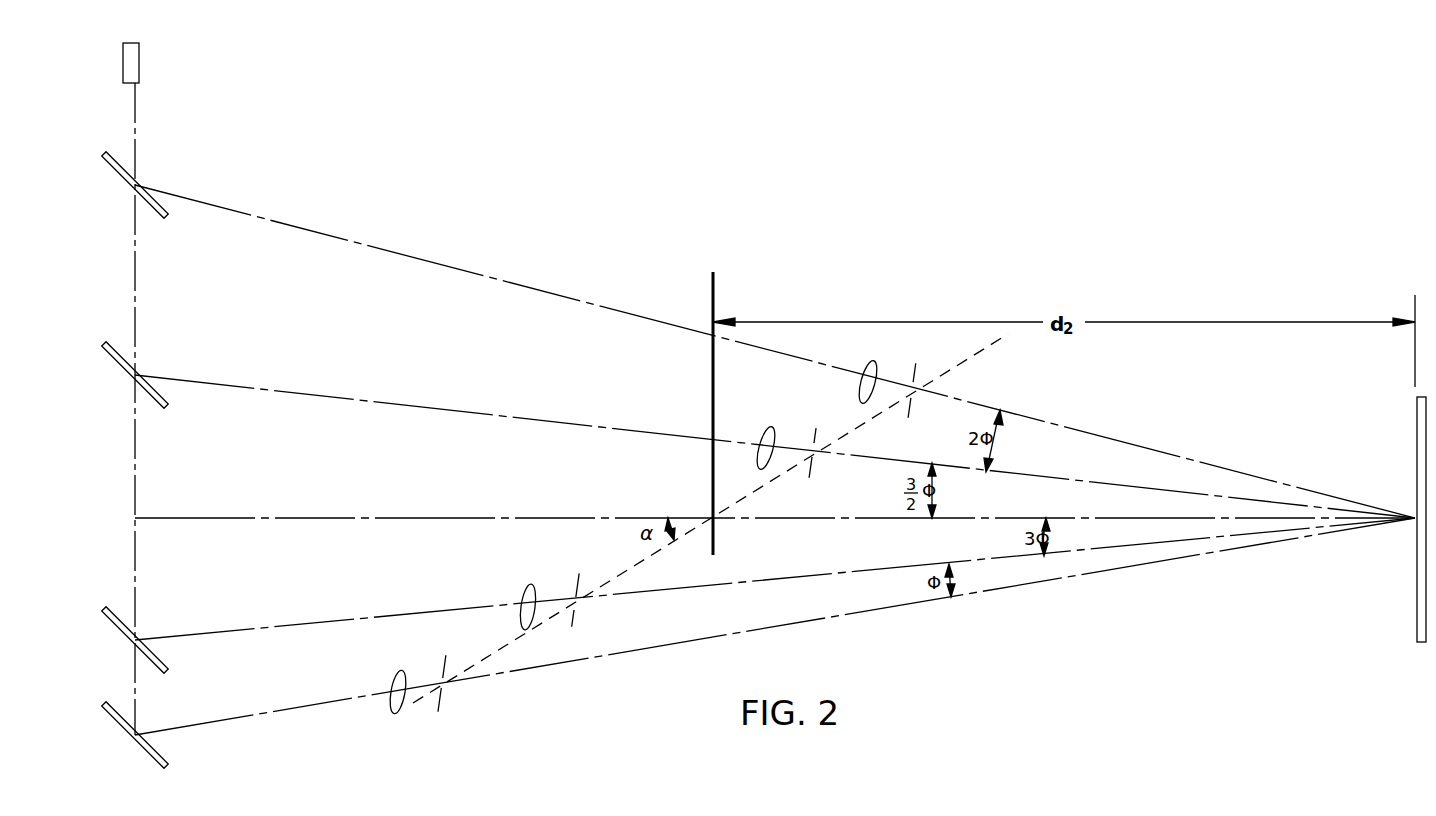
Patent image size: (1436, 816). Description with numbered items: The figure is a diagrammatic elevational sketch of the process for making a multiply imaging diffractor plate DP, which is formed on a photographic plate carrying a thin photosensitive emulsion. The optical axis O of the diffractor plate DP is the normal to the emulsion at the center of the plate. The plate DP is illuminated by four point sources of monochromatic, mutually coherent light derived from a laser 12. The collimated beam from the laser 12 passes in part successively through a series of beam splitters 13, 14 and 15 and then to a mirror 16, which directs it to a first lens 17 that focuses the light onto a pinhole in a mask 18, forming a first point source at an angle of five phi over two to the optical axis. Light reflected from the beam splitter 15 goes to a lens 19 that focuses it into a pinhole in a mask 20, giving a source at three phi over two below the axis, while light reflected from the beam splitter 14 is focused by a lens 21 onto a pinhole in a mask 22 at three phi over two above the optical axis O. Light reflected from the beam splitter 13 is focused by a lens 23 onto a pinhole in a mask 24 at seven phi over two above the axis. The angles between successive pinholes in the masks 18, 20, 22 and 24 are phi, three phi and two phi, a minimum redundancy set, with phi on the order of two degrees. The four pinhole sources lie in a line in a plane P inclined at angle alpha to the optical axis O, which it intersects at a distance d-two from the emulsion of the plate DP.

The laser 12 is at (139, 70).
The beam splitter 13 is at (116, 183).
The beam splitter 14 is at (116, 373).
The beam splitter 15 is at (118, 642).
The mirror 16 is at (120, 740).
The first lens 17 is at (404, 708).
The mask 18 is at (445, 706).
The lens 19 is at (534, 586).
The mask 20 is at (578, 620).
The lens 21 is at (781, 418).
The mask 22 is at (815, 470).
The lens 23 is at (875, 364).
The mask 24 is at (911, 405).
The diffractor plate DP is at (1427, 640).
The optical axis O is at (552, 516).
The plane P is at (982, 346).